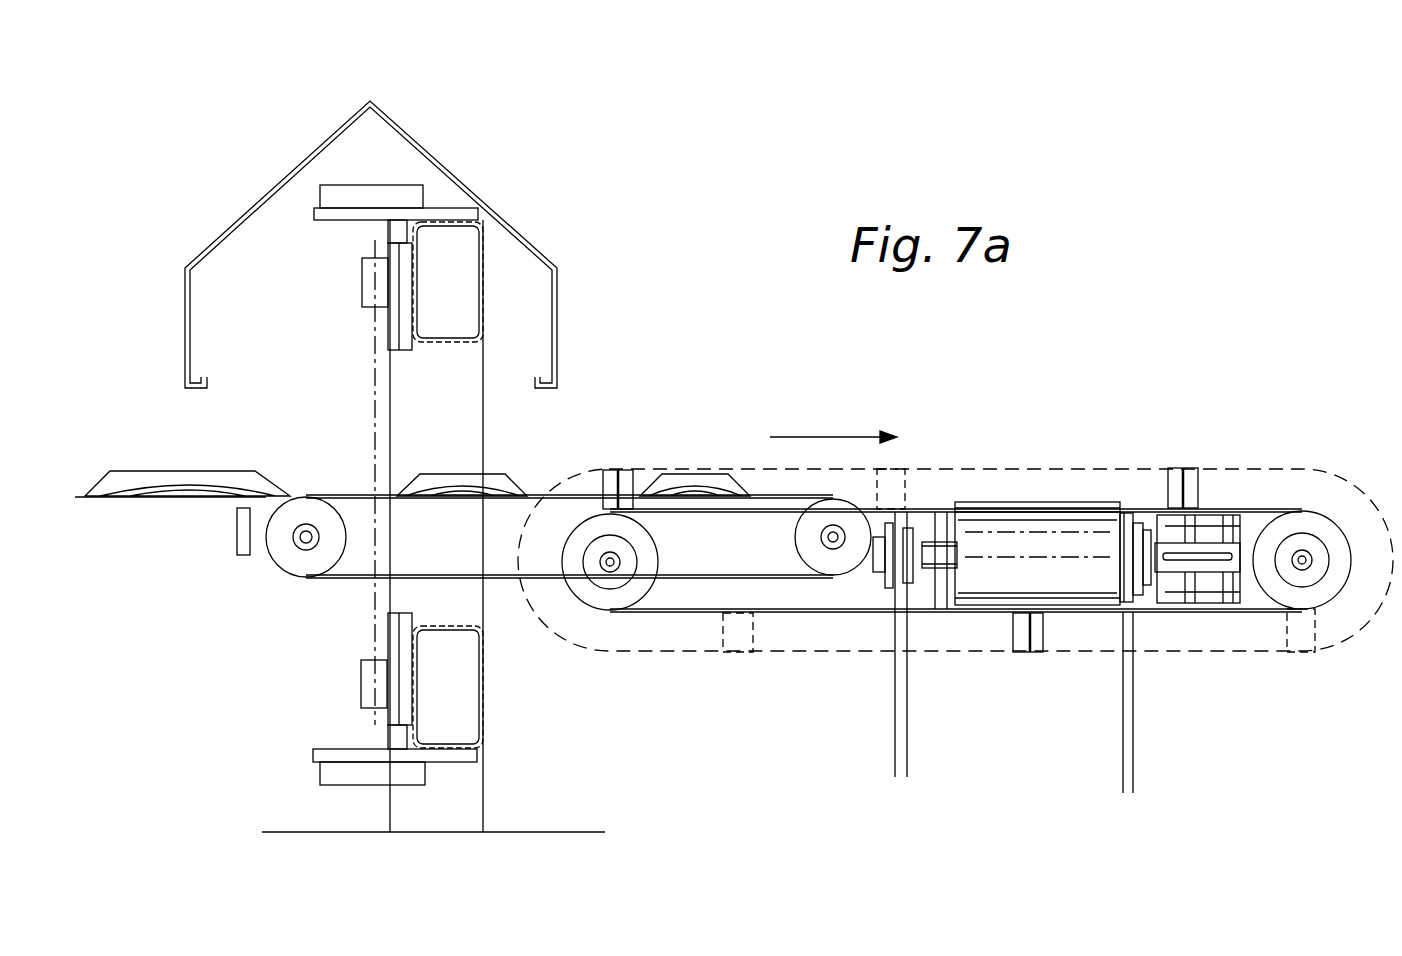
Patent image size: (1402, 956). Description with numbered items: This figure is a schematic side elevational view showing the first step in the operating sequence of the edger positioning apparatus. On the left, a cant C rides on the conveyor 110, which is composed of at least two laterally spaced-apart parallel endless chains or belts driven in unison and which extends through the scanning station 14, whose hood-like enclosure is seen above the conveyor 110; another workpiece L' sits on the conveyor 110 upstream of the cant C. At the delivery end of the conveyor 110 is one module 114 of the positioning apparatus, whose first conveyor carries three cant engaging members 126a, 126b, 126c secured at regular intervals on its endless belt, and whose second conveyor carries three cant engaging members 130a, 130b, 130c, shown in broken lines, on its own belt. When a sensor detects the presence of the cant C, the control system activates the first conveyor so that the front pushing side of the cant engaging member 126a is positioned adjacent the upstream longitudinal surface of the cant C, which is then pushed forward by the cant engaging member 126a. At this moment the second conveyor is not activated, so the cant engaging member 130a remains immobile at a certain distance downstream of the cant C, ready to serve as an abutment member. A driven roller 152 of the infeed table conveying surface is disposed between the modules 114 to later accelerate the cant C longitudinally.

The scanning station 14 is at (474, 152).
The conveyor 110 is at (361, 525).
The module 114 is at (1028, 446).
The driven roller 152 is at (1073, 582).
The cant engaging member 126a is at (618, 488).
The cant engaging member 126b is at (1185, 484).
The cant engaging member 126c is at (1023, 632).
The cant engaging member 130a is at (918, 452).
The cant engaging member 130b is at (1295, 630).
The cant engaging member 130c is at (740, 640).
The lid L' is at (462, 454).
The cant C is at (695, 490).